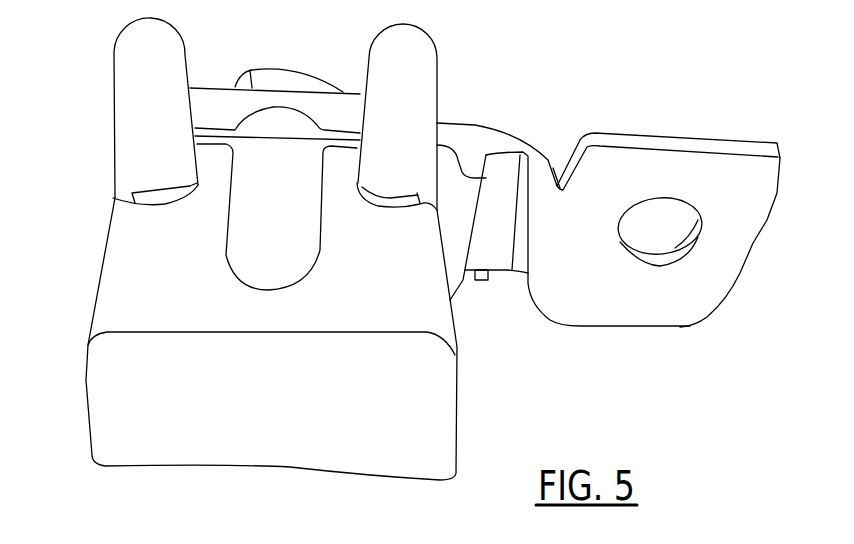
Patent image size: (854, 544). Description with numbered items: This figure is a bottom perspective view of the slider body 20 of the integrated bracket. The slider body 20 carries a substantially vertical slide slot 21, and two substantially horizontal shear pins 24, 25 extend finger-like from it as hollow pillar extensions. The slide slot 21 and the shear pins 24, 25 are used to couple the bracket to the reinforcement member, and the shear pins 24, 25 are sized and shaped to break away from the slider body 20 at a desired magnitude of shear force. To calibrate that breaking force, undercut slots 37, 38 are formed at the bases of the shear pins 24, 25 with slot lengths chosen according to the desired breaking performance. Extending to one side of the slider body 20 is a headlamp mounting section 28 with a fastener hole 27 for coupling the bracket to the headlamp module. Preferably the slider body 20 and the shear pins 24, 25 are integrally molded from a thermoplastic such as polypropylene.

The slider body 20 is at (232, 450).
The slide slot 21 is at (318, 229).
The shear pin 24 is at (122, 68).
The shear pin 25 is at (435, 65).
The fastener hole 27 is at (696, 217).
The headlamp mounting section 28 is at (701, 292).
The undercut slot 37 is at (165, 205).
The undercut slot 38 is at (392, 212).